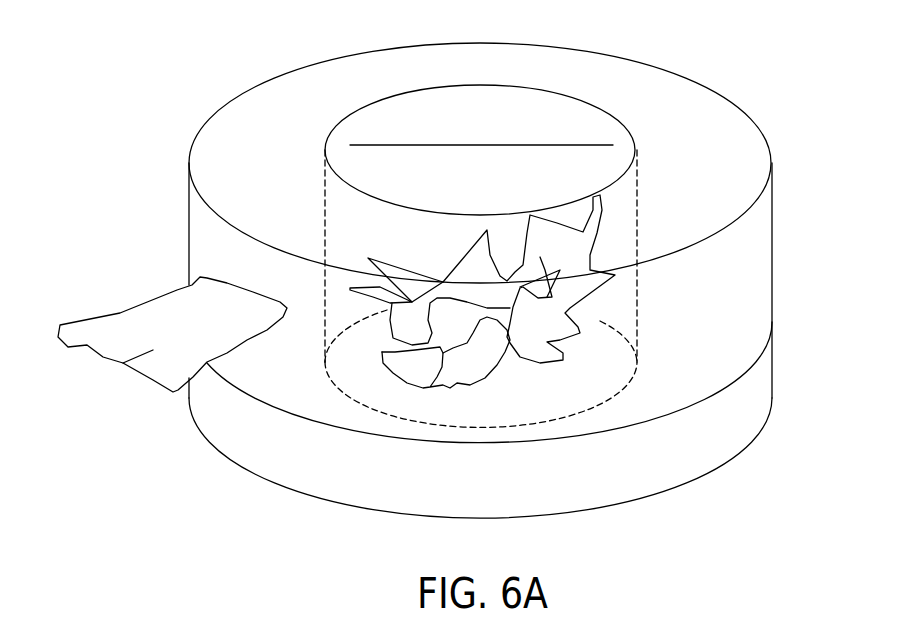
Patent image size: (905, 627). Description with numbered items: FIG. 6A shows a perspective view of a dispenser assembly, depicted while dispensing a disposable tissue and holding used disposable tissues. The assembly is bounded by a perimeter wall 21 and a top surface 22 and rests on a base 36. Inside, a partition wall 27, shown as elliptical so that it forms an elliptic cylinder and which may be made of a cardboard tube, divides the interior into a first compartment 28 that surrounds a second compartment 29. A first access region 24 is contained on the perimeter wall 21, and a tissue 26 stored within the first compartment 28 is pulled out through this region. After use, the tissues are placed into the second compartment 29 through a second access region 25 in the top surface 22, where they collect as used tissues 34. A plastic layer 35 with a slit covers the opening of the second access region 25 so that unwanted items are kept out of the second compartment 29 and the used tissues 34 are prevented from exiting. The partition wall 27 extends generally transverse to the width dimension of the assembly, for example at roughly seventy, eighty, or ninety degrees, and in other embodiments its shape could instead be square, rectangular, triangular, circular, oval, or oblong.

The perimeter wall 21 is at (200, 222).
The top surface 22 is at (317, 87).
The first access region 24 is at (195, 282).
The second access region 25 is at (552, 115).
The tissue 26 is at (87, 347).
The partition wall 27 is at (637, 295).
The first compartment 28 is at (750, 277).
The second compartment 29 is at (618, 208).
The used tissues 34 is at (432, 383).
The plastic layer 35 is at (593, 130).
The base 36 is at (750, 392).